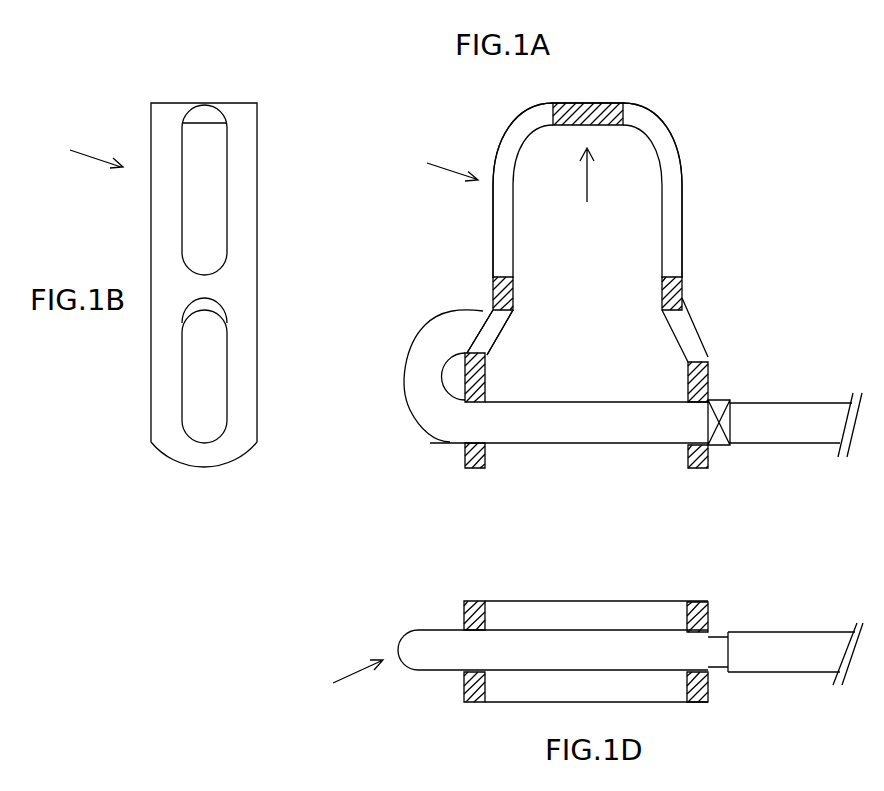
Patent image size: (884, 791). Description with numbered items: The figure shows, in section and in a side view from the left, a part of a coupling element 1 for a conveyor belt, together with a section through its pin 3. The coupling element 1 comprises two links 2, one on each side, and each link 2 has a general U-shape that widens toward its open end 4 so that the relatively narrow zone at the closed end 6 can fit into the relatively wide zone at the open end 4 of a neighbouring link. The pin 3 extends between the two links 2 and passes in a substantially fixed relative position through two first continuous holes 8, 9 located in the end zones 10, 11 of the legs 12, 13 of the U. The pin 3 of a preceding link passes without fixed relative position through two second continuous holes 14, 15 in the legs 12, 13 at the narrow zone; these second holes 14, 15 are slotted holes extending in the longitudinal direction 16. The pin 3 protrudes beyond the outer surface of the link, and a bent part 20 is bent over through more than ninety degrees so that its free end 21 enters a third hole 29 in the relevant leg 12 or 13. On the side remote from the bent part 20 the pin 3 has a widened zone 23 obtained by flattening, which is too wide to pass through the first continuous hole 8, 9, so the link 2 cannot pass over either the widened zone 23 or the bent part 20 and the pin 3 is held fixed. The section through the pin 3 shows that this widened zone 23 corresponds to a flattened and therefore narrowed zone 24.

In FIG. 1B, the coupling element 1 is at (87, 144).
In FIG. 1A, the coupling element 1 is at (441, 160).
In FIG. 1D, the coupling element 1 is at (505, 671).
In FIG. 1B, the link 2 is at (238, 253).
In FIG. 1A, the link 2 is at (672, 240).
In FIG. 1D, the link 2 is at (708, 610).
In FIG. 1A, the pin 3 is at (793, 412).
In FIG. 1D, the pin 3 is at (817, 643).
In FIG. 1A, the open end 4 is at (580, 488).
In FIG. 1A, the closed end 6 is at (593, 110).
In FIG. 1A, the first continuous hole 8 is at (475, 423).
In FIG. 1D, the first continuous hole 8 is at (475, 653).
In FIG. 1A, the first continuous hole 9 is at (697, 425).
In FIG. 1D, the first continuous hole 9 is at (697, 657).
In FIG. 1A, the end zone 10 is at (468, 388).
In FIG. 1A, the end zone 11 is at (708, 387).
In FIG. 1A, the leg 12 is at (485, 296).
In FIG. 1A, the leg 13 is at (682, 293).
In FIG. 1A, the second continuous hole 14 is at (520, 140).
In FIG. 1B, the second continuous hole 15 is at (210, 148).
In FIG. 1A, the second continuous hole 15 is at (665, 171).
In FIG. 1A, the longitudinal direction 16 is at (593, 182).
In FIG. 1B, the bent part 20 is at (197, 375).
In FIG. 1A, the bent part 20 is at (420, 372).
In FIG. 1A, the free end 21 is at (503, 315).
In FIG. 1A, the widened zone 23 is at (720, 437).
In FIG. 1D, the narrowed zone 24 is at (725, 625).
In FIG. 1B, the third hole 29 is at (208, 300).
In FIG. 1A, the third hole 29 is at (485, 357).